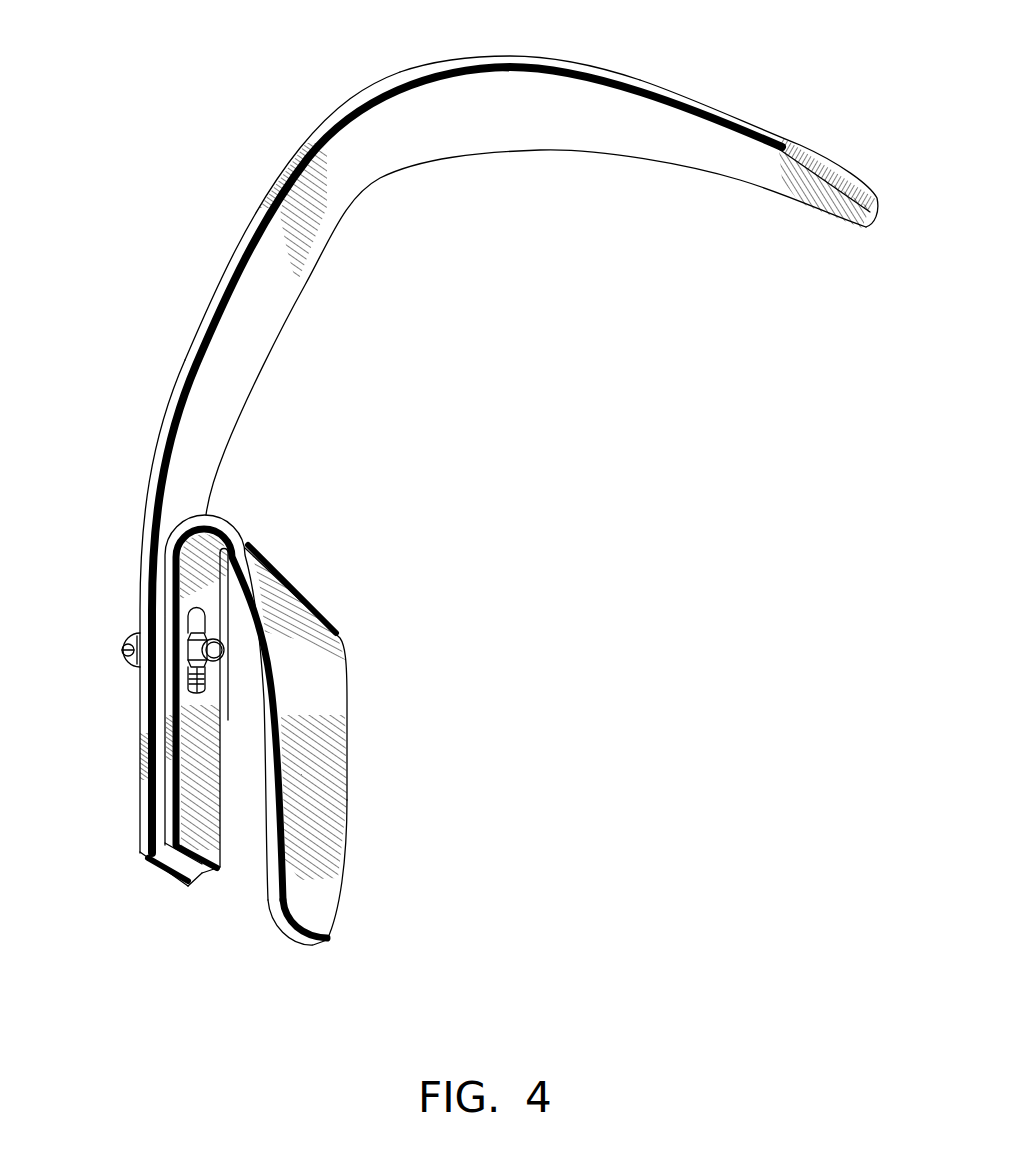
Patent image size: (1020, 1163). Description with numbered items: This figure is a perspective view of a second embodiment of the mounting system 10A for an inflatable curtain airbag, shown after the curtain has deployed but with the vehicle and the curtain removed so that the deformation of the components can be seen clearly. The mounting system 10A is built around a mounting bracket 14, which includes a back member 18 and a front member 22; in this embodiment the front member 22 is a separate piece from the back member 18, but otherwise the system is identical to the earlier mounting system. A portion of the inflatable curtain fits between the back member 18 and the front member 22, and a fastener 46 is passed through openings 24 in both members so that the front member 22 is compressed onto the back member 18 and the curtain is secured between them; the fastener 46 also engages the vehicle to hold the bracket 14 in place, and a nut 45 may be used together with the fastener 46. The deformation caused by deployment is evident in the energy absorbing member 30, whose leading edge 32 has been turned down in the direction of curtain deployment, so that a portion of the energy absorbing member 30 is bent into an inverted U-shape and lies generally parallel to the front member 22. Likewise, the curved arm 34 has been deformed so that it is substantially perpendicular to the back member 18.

The mounting system 10A is at (233, 188).
The mounting bracket 14 is at (207, 305).
The back member 18 is at (138, 505).
The front member 22 is at (205, 765).
The openings 24 is at (200, 692).
The energy absorbing member 30 is at (317, 762).
The leading edge 32 is at (300, 942).
The curved arm 34 is at (504, 56).
The nut 45 is at (120, 647).
The fastener 46 is at (187, 645).